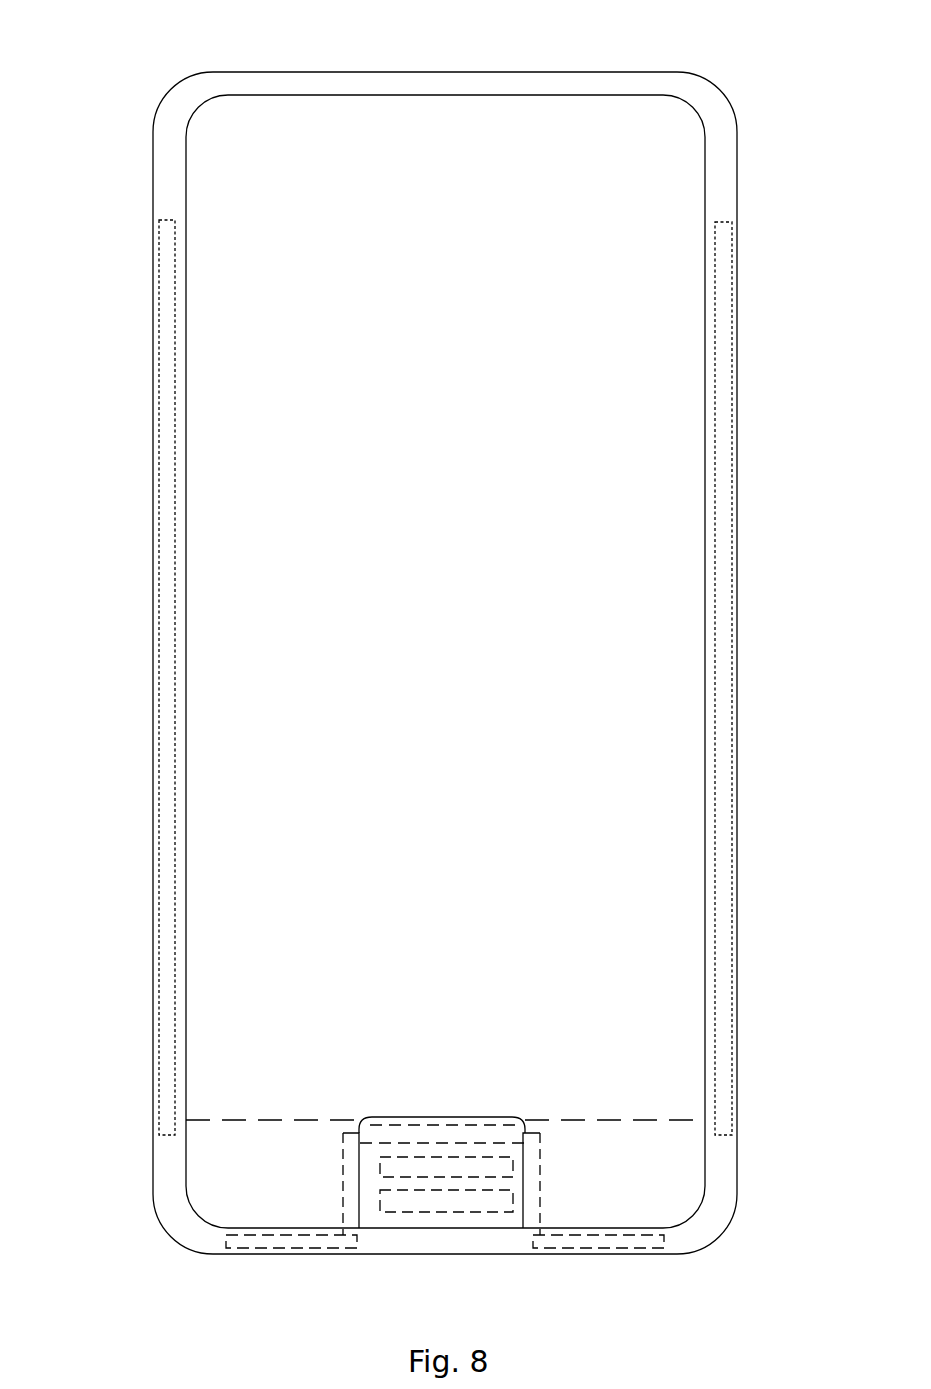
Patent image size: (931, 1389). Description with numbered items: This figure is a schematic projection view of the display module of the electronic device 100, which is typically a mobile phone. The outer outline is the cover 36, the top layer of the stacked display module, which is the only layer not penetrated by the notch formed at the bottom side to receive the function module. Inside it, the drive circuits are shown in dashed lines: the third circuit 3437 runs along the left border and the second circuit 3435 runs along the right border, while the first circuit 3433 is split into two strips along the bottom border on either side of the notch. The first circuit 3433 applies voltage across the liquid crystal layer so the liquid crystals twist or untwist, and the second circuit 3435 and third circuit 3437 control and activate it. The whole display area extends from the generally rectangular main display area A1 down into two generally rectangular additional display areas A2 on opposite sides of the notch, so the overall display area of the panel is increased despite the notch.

The electronic device 100 is at (88, 34).
The cover 36 is at (348, 68).
The third circuit 3437 is at (167, 520).
The second circuit 3435 is at (725, 508).
The first circuit 3433 is at (292, 1245).
The main display area A1 is at (273, 897).
The additional display areas A2 is at (220, 1178).